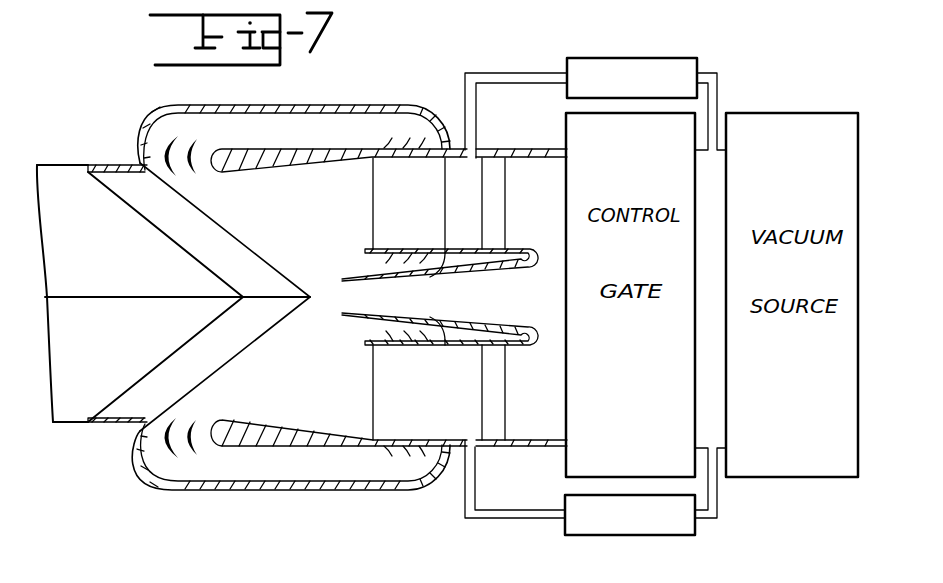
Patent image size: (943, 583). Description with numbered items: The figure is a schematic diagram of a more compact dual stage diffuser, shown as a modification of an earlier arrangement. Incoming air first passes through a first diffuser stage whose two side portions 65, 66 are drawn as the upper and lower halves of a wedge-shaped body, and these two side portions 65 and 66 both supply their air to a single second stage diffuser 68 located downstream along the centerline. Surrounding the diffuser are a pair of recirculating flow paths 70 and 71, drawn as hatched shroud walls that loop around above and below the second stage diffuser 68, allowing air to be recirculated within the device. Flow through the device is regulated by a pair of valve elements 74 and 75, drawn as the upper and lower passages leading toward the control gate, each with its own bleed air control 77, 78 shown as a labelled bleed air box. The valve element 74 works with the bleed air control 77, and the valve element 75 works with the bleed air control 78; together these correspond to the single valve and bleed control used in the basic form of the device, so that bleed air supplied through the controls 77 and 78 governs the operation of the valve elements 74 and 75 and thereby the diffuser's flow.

The side portion of the first diffuser stage 65 is at (170, 222).
The side portion of the first diffuser stage 66 is at (145, 383).
The second stage diffuser 68 is at (353, 292).
The recirculating flow path 70 is at (325, 127).
The recirculating flow path 71 is at (294, 466).
The valve element 74 is at (490, 172).
The valve element 75 is at (492, 427).
The bleed air control 77 is at (660, 68).
The bleed air control 78 is at (613, 528).